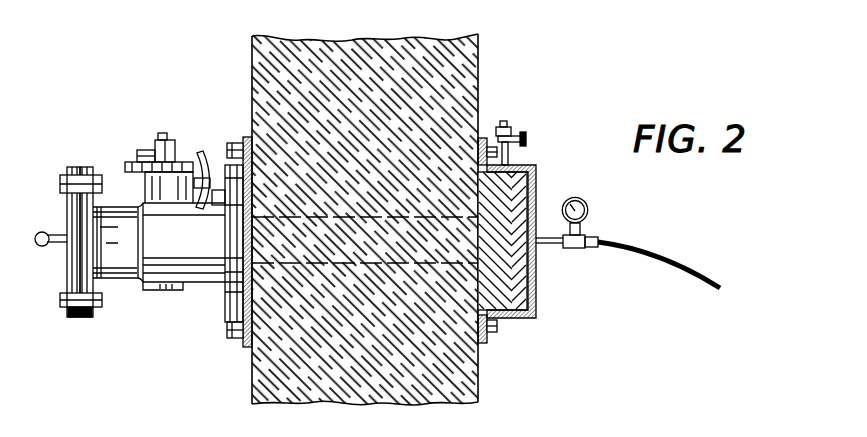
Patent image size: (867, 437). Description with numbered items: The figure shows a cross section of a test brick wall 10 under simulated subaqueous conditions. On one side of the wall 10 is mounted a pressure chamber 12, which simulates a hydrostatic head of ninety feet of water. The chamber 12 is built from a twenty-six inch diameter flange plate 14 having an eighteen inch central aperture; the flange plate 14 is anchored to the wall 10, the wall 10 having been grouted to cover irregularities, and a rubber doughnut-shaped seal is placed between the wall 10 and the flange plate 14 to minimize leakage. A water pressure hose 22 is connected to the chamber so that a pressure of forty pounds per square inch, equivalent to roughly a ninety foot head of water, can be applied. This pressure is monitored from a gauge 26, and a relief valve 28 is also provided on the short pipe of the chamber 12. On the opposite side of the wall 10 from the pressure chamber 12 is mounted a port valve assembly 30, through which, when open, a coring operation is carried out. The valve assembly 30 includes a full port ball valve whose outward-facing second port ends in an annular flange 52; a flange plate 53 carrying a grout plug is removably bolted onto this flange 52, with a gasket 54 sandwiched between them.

The brick wall 10 is at (468, 79).
The pressure chamber 12 is at (516, 318).
The flange plate 14 is at (486, 341).
The water pressure hose 22 is at (633, 250).
The gauge 26 is at (592, 190).
The relief valve 28 is at (508, 125).
The port valve assembly 30 is at (136, 295).
The annular flange 52 is at (88, 166).
The flange plate 53 is at (70, 164).
The gasket 54 is at (78, 320).